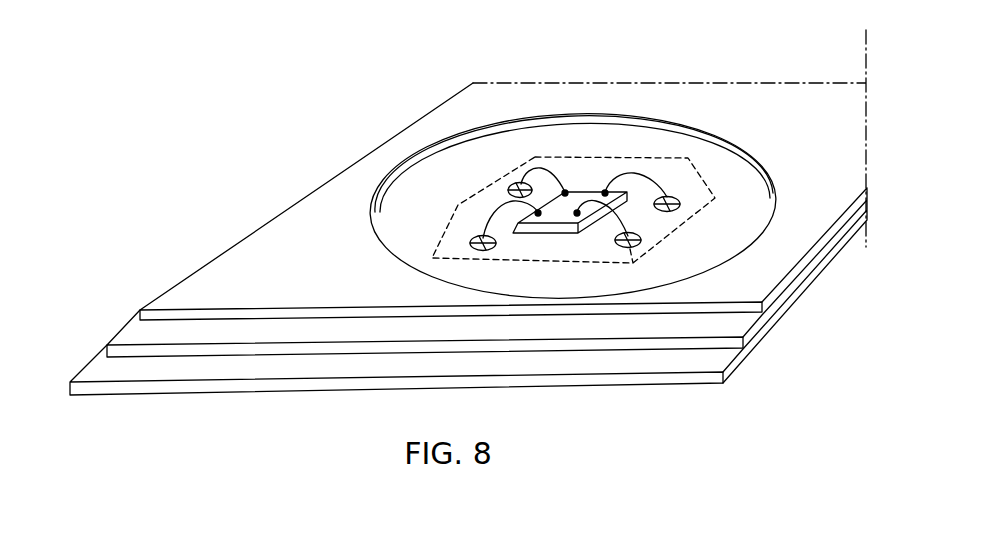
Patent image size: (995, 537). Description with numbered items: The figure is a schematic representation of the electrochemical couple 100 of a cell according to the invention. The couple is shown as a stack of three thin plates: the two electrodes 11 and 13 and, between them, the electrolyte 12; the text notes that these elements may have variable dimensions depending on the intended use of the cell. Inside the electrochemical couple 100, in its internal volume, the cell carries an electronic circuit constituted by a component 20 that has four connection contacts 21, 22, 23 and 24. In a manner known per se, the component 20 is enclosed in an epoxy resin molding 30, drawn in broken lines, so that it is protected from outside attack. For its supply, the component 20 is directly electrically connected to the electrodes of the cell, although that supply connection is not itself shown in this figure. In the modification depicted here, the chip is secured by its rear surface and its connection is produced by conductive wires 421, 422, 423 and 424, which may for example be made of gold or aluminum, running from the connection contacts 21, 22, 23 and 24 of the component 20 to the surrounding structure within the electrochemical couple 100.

The electrode 11 is at (200, 292).
The electrolyte 12 is at (155, 333).
The electrode 13 is at (102, 372).
The component 20 is at (565, 193).
The connection contact 21 is at (607, 190).
The connection contact 22 is at (535, 182).
The connection contact 23 is at (510, 199).
The connection contact 24 is at (605, 192).
The epoxy resin molding 30 is at (580, 157).
The electrochemical couple 100 is at (755, 358).
The conductive wire 421 is at (627, 202).
The conductive wire 422 is at (520, 187).
The conductive wire 423 is at (490, 213).
The conductive wire 424 is at (603, 217).